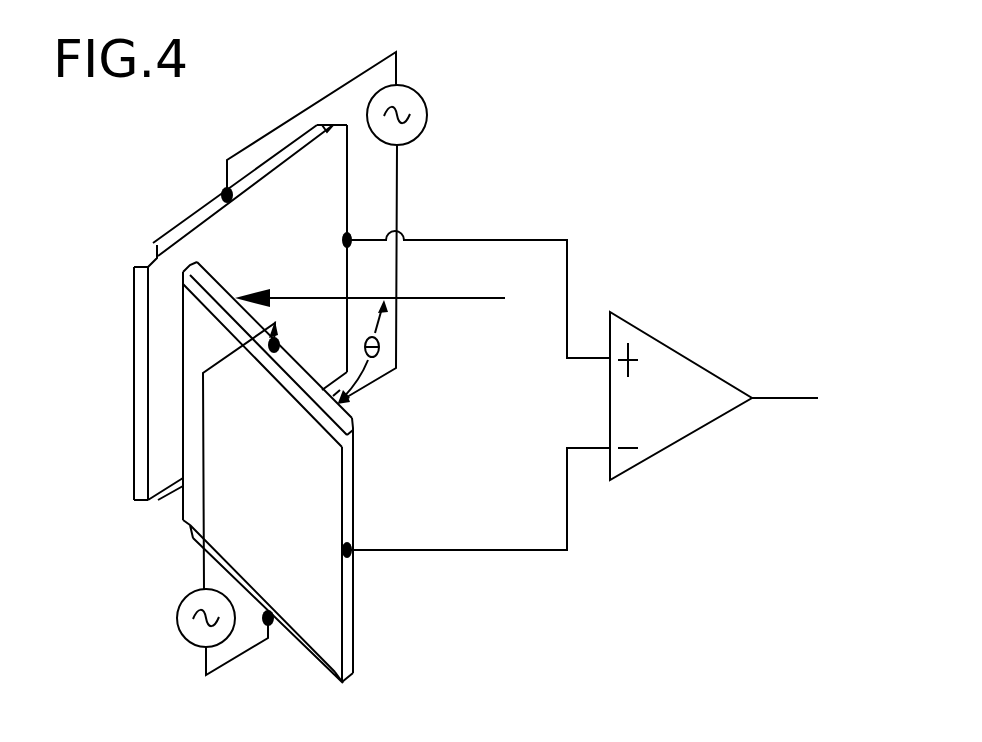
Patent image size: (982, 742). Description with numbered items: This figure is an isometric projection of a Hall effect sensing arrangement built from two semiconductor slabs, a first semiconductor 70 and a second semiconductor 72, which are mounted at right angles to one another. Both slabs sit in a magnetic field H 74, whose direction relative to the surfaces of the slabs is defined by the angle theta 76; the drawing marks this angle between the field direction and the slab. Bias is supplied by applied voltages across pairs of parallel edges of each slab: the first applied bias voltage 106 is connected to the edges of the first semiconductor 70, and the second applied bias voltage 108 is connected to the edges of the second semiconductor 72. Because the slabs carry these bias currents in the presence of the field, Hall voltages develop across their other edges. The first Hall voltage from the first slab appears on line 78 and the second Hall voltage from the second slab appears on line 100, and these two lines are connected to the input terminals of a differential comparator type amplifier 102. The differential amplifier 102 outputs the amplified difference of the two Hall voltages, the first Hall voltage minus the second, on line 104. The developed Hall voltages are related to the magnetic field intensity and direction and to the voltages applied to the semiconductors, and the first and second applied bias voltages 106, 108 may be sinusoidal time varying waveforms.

The semiconductor 70 is at (145, 260).
The semiconductor 72 is at (297, 643).
The magnetic field H 74 is at (436, 302).
The angle theta 76 is at (386, 347).
The line 78 is at (428, 238).
The line 100 is at (440, 550).
The differential amplifier 102 is at (683, 385).
The line 104 is at (775, 402).
The applied voltage VB1 106 is at (420, 92).
The applied voltage VB2 108 is at (172, 573).